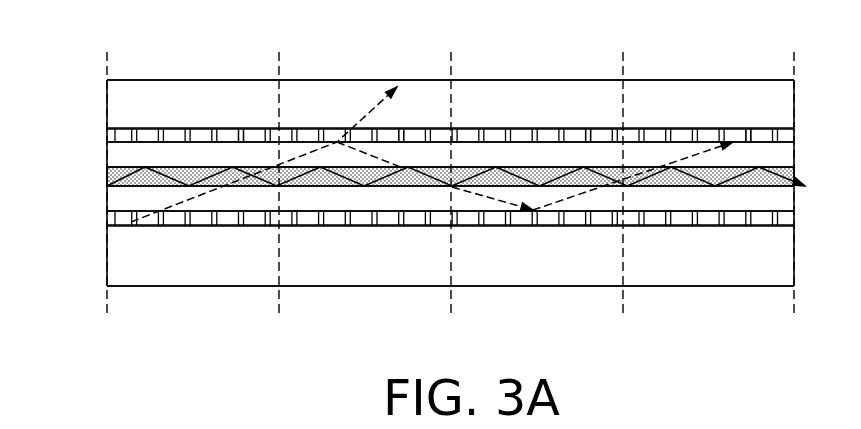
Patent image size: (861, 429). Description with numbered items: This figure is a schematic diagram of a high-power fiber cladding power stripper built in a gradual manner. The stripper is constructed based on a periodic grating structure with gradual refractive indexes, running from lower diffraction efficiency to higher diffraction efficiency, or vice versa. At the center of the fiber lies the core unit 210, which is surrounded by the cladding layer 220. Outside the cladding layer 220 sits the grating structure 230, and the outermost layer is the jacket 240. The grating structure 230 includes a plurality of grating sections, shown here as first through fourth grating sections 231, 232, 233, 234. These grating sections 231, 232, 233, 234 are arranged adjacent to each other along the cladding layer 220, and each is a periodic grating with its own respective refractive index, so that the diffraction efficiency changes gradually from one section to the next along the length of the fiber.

The core unit 210 is at (107, 185).
The cladding layer 220 is at (107, 165).
The grating structure 230 is at (107, 141).
The jacket 240 is at (108, 100).
The grating section 231 is at (247, 137).
The grating section 232 is at (418, 138).
The grating section 233 is at (590, 137).
The grating section 234 is at (758, 137).